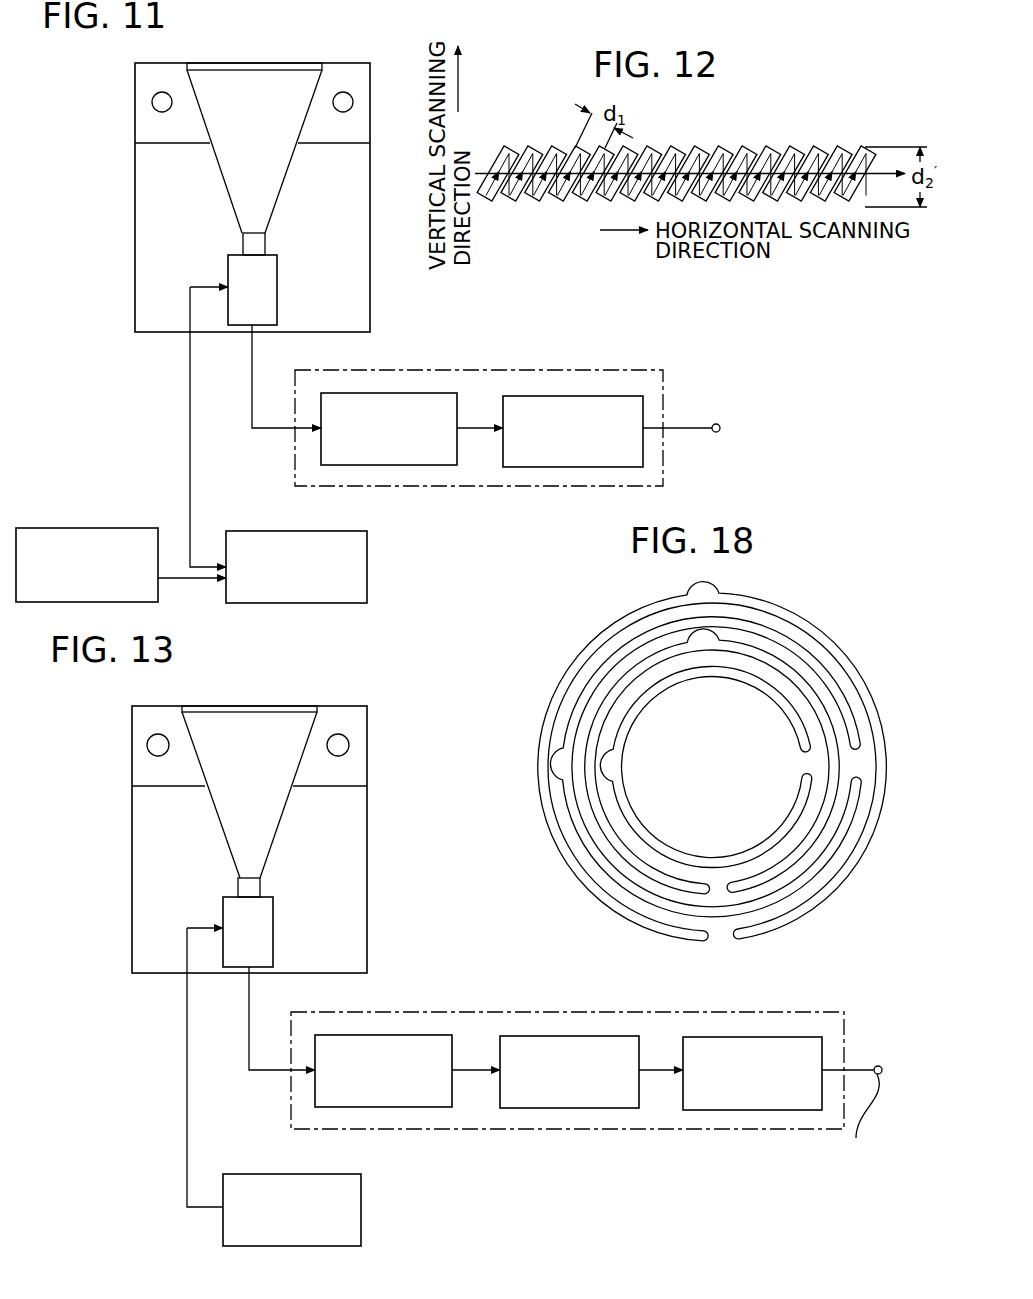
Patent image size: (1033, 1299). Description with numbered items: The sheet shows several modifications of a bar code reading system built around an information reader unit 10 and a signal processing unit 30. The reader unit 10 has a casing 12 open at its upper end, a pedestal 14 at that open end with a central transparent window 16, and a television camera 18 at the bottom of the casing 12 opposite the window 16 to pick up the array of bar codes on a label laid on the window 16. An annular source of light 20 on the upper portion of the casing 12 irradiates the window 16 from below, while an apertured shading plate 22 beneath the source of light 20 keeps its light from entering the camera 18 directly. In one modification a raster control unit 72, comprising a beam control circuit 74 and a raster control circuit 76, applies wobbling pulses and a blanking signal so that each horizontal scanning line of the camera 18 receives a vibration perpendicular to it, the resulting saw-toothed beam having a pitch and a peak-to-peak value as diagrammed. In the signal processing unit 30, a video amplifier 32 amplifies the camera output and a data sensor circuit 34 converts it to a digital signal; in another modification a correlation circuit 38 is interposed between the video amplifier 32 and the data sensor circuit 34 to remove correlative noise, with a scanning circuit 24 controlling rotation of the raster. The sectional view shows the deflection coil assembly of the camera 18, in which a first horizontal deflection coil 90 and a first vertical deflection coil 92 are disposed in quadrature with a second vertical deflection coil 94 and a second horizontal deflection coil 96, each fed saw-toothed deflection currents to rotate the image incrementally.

In FIG. 11, the information reader unit 10 is at (267, 27).
In FIG. 13, the information reader unit 10 is at (285, 666).
In FIG. 11, the casing 12 is at (371, 226).
In FIG. 13, the casing 12 is at (368, 858).
In FIG. 11, the pedestal 14 is at (338, 63).
In FIG. 13, the pedestal 14 is at (337, 706).
In FIG. 11, the transparent window 16 is at (232, 63).
In FIG. 13, the transparent window 16 is at (262, 706).
In FIG. 11, the television camera 18 is at (278, 281).
In FIG. 13, the television camera 18 is at (274, 926).
In FIG. 11, the source of light 20 is at (152, 102).
In FIG. 13, the source of light 20 is at (147, 746).
In FIG. 11, the shading plate 22 is at (185, 144).
In FIG. 13, the shading plate 22 is at (165, 787).
In FIG. 13, the scanning circuit 24 is at (293, 1174).
In FIG. 11, the signal processing unit 30 is at (471, 356).
In FIG. 13, the signal processing unit 30 is at (553, 986).
In FIG. 11, the video amplifier 32 is at (460, 412).
In FIG. 13, the video amplifier 32 is at (454, 1044).
In FIG. 11, the data sensor circuit 34 is at (645, 410).
In FIG. 13, the data sensor circuit 34 is at (823, 1055).
In FIG. 13, the correlation circuit 38 is at (641, 1046).
In FIG. 11, the raster control unit 72 is at (134, 492).
In FIG. 11, the beam control circuit 74 is at (158, 534).
In FIG. 11, the raster control circuit 76 is at (358, 534).
In FIG. 18, the first horizontal deflection coil 90 is at (806, 740).
In FIG. 18, the first vertical deflection coil 92 is at (832, 722).
In FIG. 18, the second vertical deflection coil 94 is at (828, 669).
In FIG. 18, the second horizontal deflection coil 96 is at (799, 613).